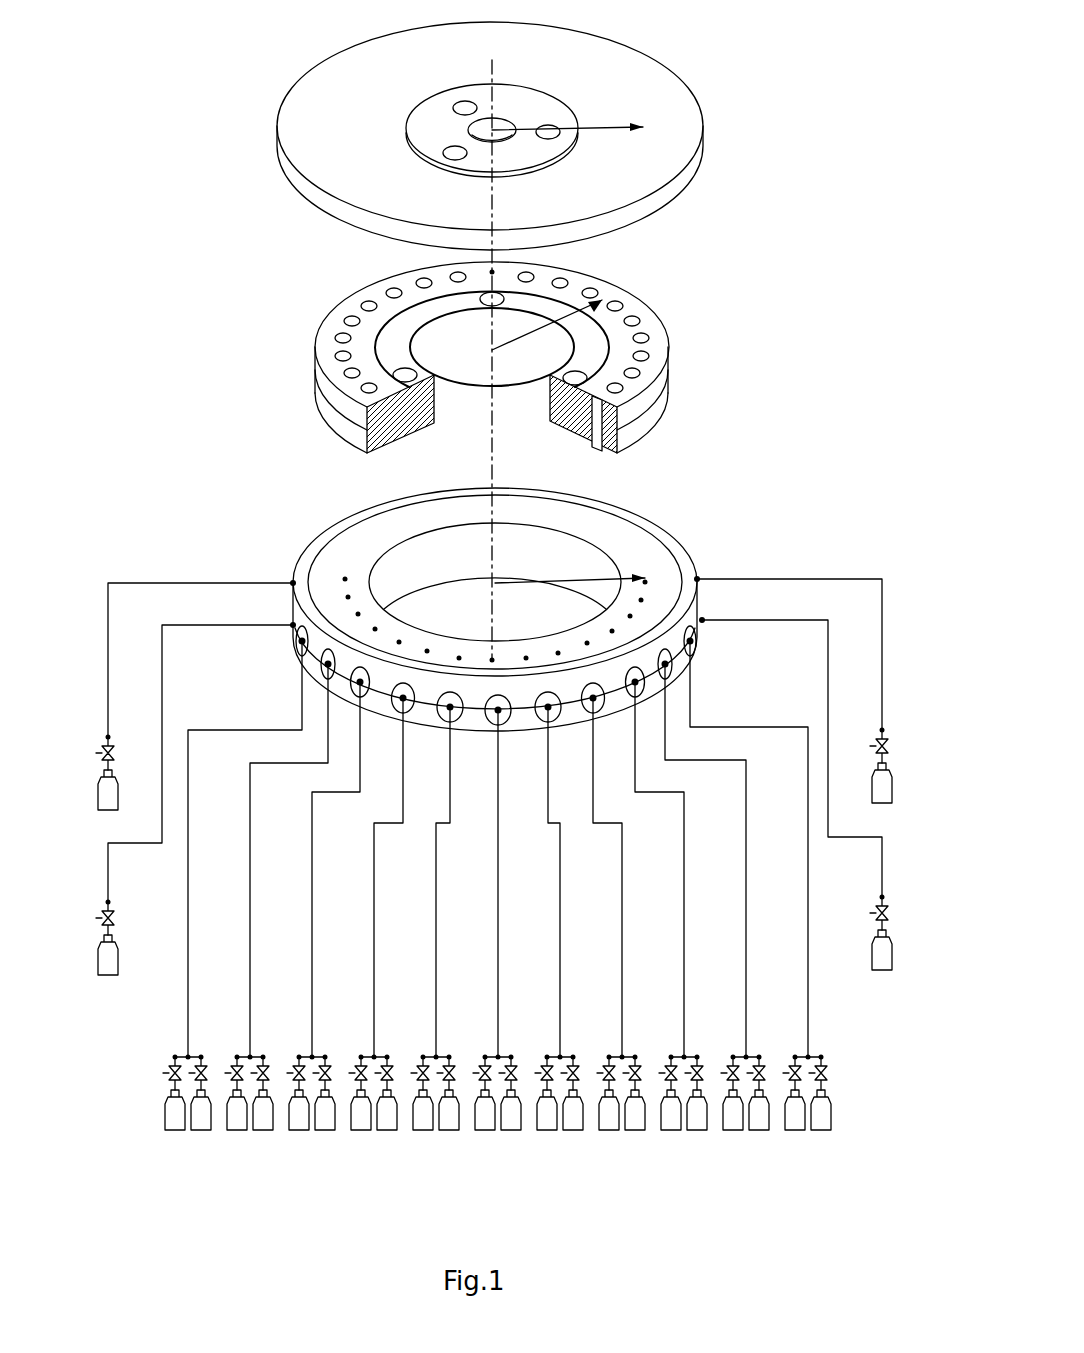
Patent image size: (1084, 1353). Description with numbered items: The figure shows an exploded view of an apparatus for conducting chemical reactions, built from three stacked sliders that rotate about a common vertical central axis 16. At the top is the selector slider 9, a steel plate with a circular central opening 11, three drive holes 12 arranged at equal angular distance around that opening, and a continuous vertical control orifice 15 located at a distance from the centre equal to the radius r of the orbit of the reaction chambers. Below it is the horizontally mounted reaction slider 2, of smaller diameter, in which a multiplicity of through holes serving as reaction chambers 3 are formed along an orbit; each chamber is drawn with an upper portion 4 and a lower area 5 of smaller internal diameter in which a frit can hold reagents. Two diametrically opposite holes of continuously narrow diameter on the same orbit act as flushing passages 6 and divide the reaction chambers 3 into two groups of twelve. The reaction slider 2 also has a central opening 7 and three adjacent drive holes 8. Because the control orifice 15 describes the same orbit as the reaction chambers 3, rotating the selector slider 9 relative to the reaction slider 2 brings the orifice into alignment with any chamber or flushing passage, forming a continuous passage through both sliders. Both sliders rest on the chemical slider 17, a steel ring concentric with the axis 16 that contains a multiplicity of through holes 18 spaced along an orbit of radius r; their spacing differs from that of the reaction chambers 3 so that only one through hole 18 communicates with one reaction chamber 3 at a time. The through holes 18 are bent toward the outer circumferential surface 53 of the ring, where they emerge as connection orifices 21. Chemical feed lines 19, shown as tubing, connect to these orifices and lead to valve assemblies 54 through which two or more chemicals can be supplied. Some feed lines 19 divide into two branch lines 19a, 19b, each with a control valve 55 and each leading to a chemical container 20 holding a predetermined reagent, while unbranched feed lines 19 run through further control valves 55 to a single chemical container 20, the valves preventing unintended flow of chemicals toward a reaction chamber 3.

The reaction slider 2 is at (655, 350).
The reaction chambers 3 is at (640, 318).
The lower ring flange 4 is at (598, 422).
The lower area 5 is at (596, 446).
The flushing passages 6 is at (494, 272).
The central opening 7 is at (457, 338).
The drive holes 8 is at (398, 377).
The selector slider 9 is at (690, 148).
The central opening 11 is at (516, 128).
The drive holes 12 is at (440, 100).
The control orifice 15 is at (643, 127).
The common vertical central axis 16 is at (492, 466).
The chemical slider 17 is at (635, 525).
The through holes 18 is at (345, 577).
The chemical feed lines 19 is at (128, 583).
The branch line 19a is at (455, 1085).
The branch line 19b is at (417, 1085).
The chemical container 20 is at (100, 815).
The connection orifices 21 is at (296, 639).
The outer circumferential surface 53 is at (320, 676).
The valve assembly 54 is at (158, 1061).
The control valve 55 is at (116, 752).